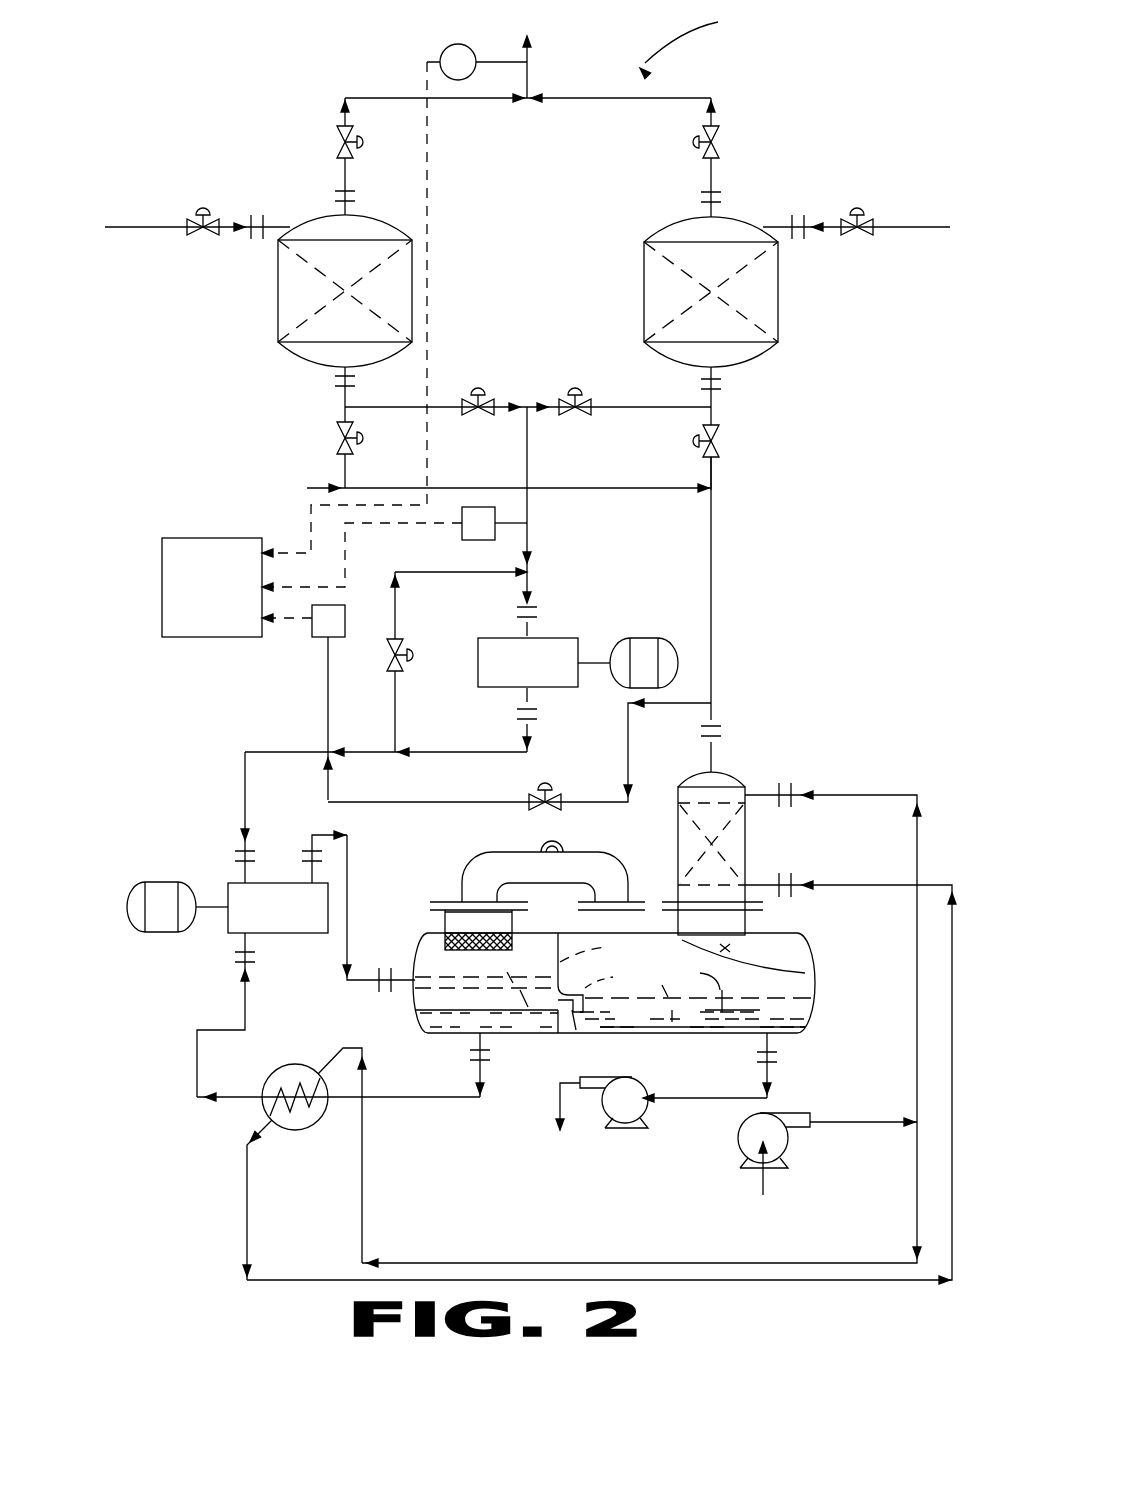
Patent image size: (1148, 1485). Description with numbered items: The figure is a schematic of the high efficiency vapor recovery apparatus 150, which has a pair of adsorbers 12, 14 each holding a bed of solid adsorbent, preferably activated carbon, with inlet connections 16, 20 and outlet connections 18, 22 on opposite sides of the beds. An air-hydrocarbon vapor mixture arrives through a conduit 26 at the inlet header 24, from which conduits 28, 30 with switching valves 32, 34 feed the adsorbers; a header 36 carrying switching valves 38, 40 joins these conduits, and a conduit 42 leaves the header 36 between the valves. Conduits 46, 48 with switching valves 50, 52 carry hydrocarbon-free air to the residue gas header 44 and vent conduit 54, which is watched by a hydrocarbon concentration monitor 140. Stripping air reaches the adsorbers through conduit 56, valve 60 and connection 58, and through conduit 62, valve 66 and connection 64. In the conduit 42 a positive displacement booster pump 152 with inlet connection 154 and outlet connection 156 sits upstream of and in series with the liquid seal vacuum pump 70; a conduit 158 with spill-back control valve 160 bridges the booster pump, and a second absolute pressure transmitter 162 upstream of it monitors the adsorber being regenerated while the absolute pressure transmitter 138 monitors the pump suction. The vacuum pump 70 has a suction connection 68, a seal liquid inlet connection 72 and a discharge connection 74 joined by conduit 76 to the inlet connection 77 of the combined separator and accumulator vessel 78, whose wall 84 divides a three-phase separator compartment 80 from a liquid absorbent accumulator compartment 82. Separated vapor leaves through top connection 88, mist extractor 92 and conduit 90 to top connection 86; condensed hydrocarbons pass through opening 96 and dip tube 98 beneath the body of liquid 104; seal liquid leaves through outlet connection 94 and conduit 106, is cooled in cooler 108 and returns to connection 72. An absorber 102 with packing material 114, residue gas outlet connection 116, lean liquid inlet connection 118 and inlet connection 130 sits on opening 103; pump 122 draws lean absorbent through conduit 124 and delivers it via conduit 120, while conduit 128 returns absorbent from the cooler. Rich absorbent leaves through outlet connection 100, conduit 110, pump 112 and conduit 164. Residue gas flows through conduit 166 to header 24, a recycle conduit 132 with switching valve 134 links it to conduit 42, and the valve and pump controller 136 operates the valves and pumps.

The adsorber 12 is at (780, 293).
The adsorber 14 is at (412, 293).
The inlet connection 16 is at (708, 375).
The outlet connection 18 is at (697, 212).
The inlet connection 20 is at (342, 372).
The outlet connection 22 is at (353, 207).
The air-hydrocarbon vapor mixture inlet header 24 is at (573, 488).
The conduit 26 is at (305, 492).
The conduit 28 is at (712, 415).
The conduit 30 is at (345, 413).
The switching valve 32 is at (713, 456).
The switching valve 34 is at (338, 430).
The header 36 is at (505, 403).
The switching valve 38 is at (566, 392).
The switching valve 40 is at (495, 395).
The conduit 42 is at (530, 444).
The residue gas header 44 is at (642, 98).
The conduit 46 is at (712, 178).
The conduit 48 is at (345, 175).
The switching valve 50 is at (716, 126).
The switching valve 52 is at (340, 128).
The conduit 54 is at (532, 78).
The conduit 56 is at (880, 233).
The stripping air inlet connection 58 is at (777, 228).
The switching valve 60 is at (873, 218).
The conduit 62 is at (187, 235).
The connection 64 is at (281, 222).
The switching valve 66 is at (188, 212).
The suction connection 68 is at (243, 873).
The liquid seal vacuum pump 70 is at (318, 935).
The seal liquid inlet connection 72 is at (250, 953).
The discharge connection 74 is at (297, 872).
The conduit 76 is at (347, 857).
The inlet connection 77 is at (398, 992).
The combined three-phase separator and hydrocarbon rich liquid absorbent accumulator 78 is at (443, 930).
The three-phase separator compartment 80 is at (540, 1037).
The liquid absorbent accumulator compartment 82 is at (668, 1035).
The wall 84 is at (682, 955).
The top connection 86 is at (595, 924).
The top connection 88 is at (443, 907).
The conduit 90 is at (537, 858).
The mist extractor 92 is at (440, 940).
The outlet connection 94 is at (473, 1040).
The opening 96 is at (558, 972).
The dip tube 98 is at (611, 977).
The outlet connection 100 is at (767, 1042).
The absorber 102 is at (748, 922).
The opening 103 is at (815, 970).
The body of liquid 104 is at (711, 991).
The conduit 106 is at (448, 1100).
The cooler 108 is at (315, 1130).
The conduit 110 is at (717, 1097).
The pump 112 is at (645, 1110).
The packing material 114 is at (752, 835).
The residue gas outlet connection 116 is at (712, 752).
The lean liquid absorbent inlet connection 118 is at (772, 790).
The conduit 120 is at (840, 794).
The pump 122 is at (773, 1118).
The conduit 124 is at (767, 1185).
The conduit 128 is at (845, 883).
The inlet connection 130 is at (767, 877).
The conduit 132 is at (628, 740).
The switching valve 134 is at (537, 787).
The valve and pump controller 136 is at (175, 568).
The absolute pressure transmitter 138 is at (325, 627).
The hydrocarbon concentration monitor 140 is at (450, 45).
The apparatus 150 is at (701, 44).
The positive displacement booster pump 152 is at (553, 640).
The inlet connection 154 is at (525, 627).
The outlet connection 156 is at (518, 697).
The conduit 158 is at (398, 690).
The spill-back control valve 160 is at (400, 643).
The second absolute pressure transmitter 162 is at (470, 528).
The conduit 164 is at (560, 1105).
The conduit 166 is at (712, 548).